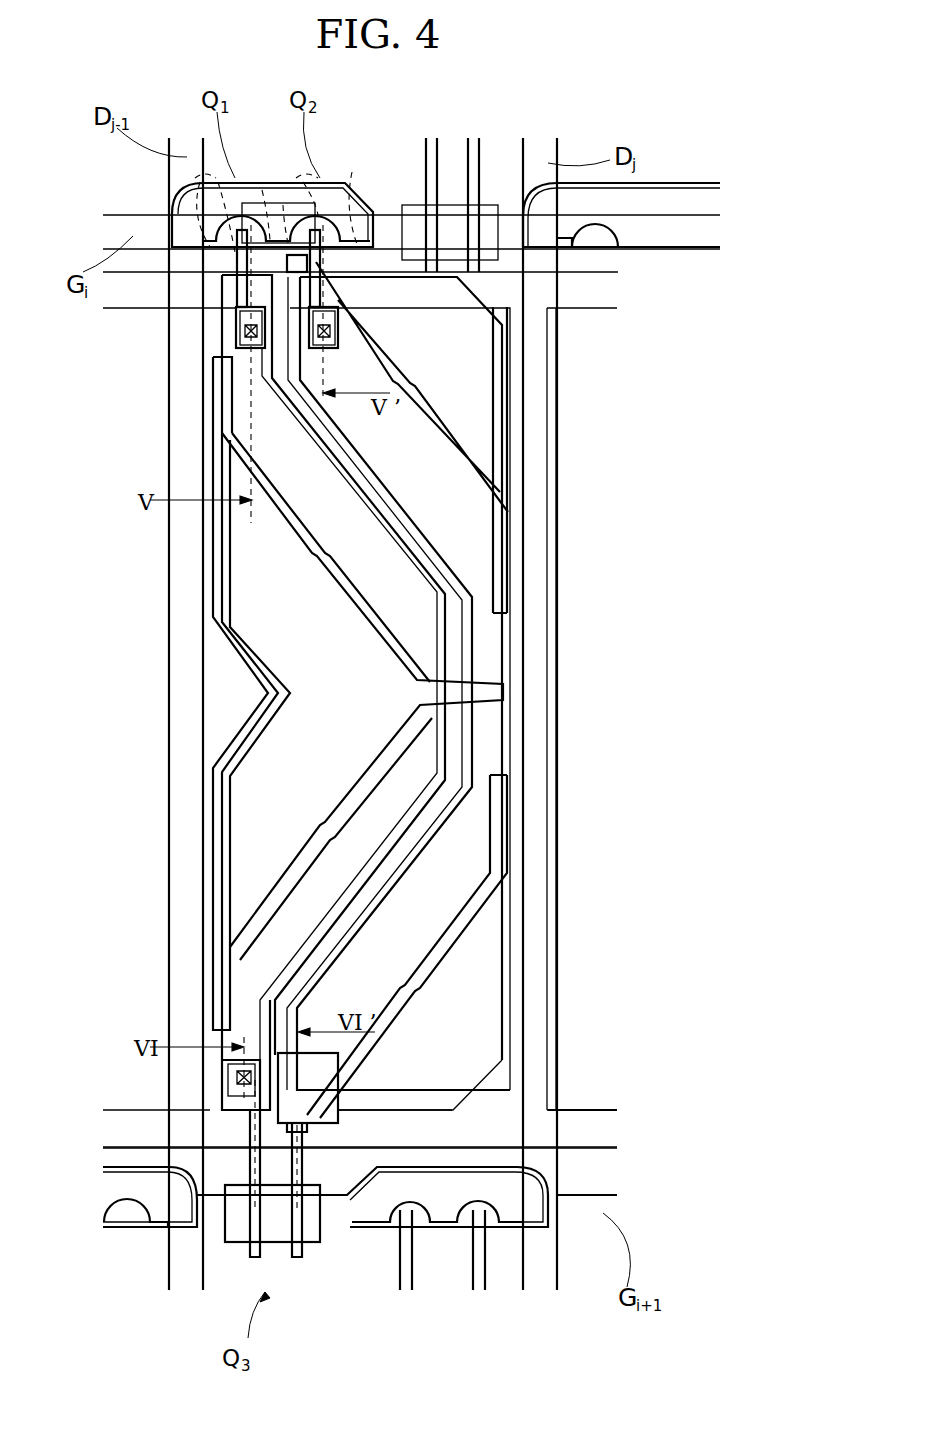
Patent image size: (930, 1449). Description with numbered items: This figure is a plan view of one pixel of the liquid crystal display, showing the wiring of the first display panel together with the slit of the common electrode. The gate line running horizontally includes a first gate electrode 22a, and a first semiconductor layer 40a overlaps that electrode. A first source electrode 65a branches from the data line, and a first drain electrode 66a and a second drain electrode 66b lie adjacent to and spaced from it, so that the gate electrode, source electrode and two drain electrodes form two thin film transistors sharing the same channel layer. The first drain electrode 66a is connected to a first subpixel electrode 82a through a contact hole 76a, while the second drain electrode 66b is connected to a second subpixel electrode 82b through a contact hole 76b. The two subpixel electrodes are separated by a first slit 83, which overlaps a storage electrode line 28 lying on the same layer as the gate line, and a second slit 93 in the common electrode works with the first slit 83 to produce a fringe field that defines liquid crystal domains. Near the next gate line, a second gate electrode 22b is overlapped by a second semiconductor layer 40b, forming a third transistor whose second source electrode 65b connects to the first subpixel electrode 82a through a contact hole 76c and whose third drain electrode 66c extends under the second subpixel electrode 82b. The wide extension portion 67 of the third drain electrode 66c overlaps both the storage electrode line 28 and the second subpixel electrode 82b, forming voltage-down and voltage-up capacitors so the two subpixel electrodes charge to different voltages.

The first gate electrode 22a is at (352, 180).
The first semiconductor layer 40a is at (172, 213).
The first source electrode 65a is at (385, 232).
The first drain electrode 66a is at (235, 286).
The contact hole 76a is at (245, 331).
The second drain electrode 66b is at (330, 262).
The contact hole 76b is at (340, 329).
The second subpixel electrode 82b is at (500, 440).
The first slit 83 is at (385, 518).
The first subpixel electrode 82a is at (445, 632).
The second slit 93 is at (327, 580).
The storage electrode line 28 is at (578, 1122).
The wide extension portion 67 is at (338, 1118).
The third drain electrode 66c is at (340, 1140).
The second source electrode 65b is at (245, 1138).
The contact hole 76c is at (236, 1077).
The second semiconductor layer 40b is at (225, 1220).
The second gate electrode 22b is at (273, 1222).